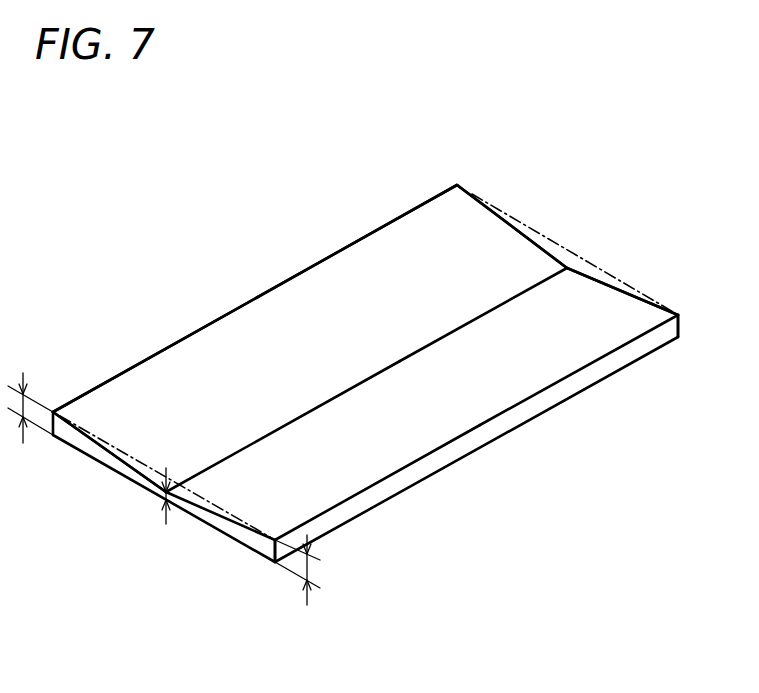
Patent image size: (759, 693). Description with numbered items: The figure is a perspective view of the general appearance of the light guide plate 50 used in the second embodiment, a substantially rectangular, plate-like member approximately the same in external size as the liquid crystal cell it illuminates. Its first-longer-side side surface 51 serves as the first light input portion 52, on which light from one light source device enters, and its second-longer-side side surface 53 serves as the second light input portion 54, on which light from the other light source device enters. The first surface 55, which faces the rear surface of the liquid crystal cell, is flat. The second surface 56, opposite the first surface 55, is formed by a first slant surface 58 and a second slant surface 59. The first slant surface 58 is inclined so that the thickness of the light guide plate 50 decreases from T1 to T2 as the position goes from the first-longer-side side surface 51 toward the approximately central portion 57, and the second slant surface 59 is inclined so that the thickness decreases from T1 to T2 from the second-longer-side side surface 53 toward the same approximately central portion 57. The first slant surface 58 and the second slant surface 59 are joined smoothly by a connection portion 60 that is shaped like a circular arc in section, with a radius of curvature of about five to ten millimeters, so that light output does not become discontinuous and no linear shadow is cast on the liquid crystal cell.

The light guide plate 50 is at (365, 378).
The first-longer-side side surface 51 is at (468, 443).
The first light input portion 52 is at (550, 397).
The second-longer-side side surface 53 is at (258, 297).
The second light input portion 54 is at (337, 250).
The first surface 55 is at (358, 516).
The second surface 56 is at (212, 398).
The approximately central portion 57 is at (408, 355).
The first slant surface 58 is at (413, 408).
The second slant surface 59 is at (338, 345).
The connection portion 60 is at (320, 408).
The thickness at the side surfaces T1 is at (164, 508).
The thickness at the central portion T2 is at (164, 513).